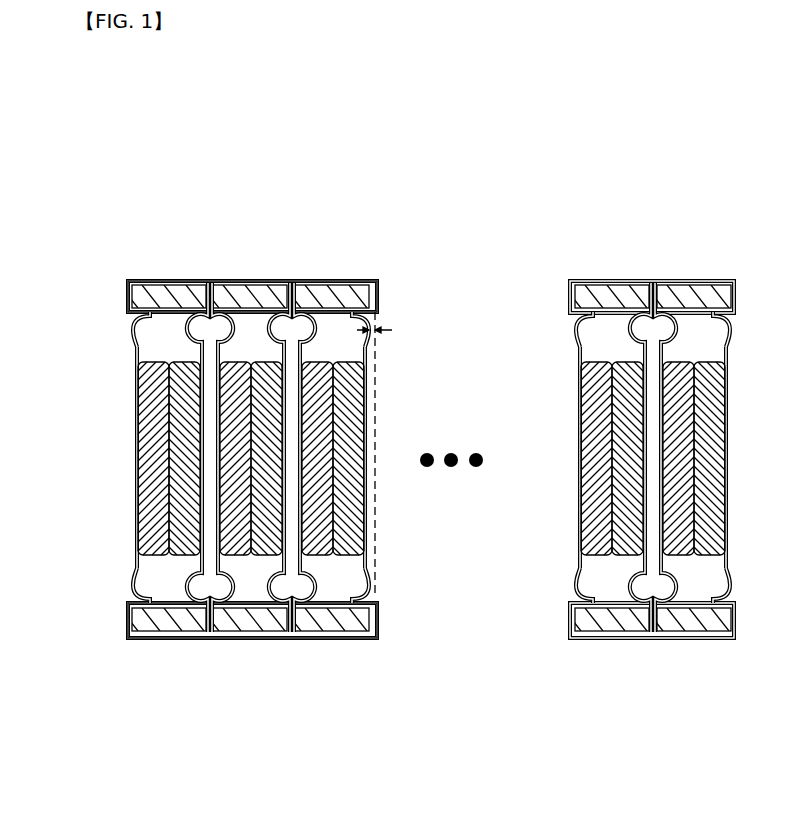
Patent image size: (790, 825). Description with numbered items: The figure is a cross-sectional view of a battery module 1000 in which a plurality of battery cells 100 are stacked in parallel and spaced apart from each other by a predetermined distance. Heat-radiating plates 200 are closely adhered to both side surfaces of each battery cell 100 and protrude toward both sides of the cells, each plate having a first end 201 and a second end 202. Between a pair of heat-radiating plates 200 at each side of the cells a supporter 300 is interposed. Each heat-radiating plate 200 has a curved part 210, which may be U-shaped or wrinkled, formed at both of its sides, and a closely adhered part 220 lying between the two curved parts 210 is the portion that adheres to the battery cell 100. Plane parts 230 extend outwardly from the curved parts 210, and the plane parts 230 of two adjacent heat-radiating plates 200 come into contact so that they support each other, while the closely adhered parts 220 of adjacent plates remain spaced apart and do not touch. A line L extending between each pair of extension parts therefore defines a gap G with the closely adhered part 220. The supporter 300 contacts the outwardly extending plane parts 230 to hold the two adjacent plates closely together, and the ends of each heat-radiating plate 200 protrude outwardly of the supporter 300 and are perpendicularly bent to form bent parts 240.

The battery module 1000 is at (275, 146).
The battery cell 100 is at (160, 442).
The heat-radiating plate 200 is at (136, 373).
The first end 201 is at (133, 282).
The second end 202 is at (130, 636).
The curved part 210 is at (134, 332).
The closely adhered part 220 is at (136, 495).
The plane part 230 is at (570, 287).
The bent part 240 is at (138, 282).
The supporter 300 is at (170, 283).
The gap G is at (371, 310).
The line L is at (380, 391).